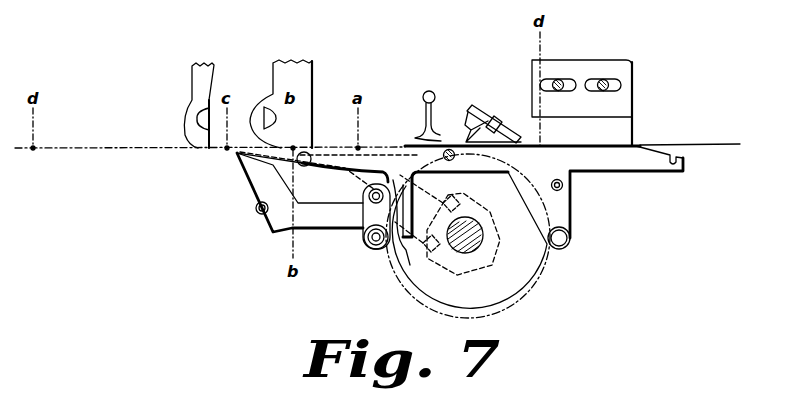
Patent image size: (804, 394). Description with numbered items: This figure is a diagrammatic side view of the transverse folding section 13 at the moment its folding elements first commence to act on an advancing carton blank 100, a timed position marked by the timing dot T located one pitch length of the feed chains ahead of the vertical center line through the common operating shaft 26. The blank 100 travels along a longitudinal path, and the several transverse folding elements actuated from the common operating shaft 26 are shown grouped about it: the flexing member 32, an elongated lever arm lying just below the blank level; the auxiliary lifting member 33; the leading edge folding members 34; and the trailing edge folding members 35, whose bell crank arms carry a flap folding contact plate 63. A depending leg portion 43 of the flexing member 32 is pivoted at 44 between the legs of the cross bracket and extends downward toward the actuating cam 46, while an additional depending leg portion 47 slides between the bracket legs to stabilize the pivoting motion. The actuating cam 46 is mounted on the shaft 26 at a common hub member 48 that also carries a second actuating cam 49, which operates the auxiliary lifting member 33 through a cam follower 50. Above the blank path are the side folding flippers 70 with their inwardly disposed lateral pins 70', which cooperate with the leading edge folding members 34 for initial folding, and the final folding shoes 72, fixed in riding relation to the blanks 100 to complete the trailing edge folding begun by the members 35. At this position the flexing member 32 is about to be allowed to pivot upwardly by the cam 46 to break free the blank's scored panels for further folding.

The carton blank 100 is at (92, 146).
The transverse folding section 13 is at (565, 277).
The common operating shaft 26 is at (480, 245).
The flexing member 32 is at (400, 150).
The auxiliary lifting member 33 is at (333, 230).
The leading edge folding members 34 is at (372, 188).
The trailing edge folding members 35 is at (481, 100).
The depending leg portion 43 is at (565, 207).
The pivot 44 is at (550, 184).
The actuating cam 46 is at (538, 295).
The additional depending leg portion 47 is at (412, 250).
The common hub member 48 is at (471, 278).
The second actuating cam 49 is at (420, 296).
The cam follower 50 is at (385, 253).
The flap folding contact plate 63 is at (500, 114).
The side folding flippers 70 is at (413, 109).
The lateral pins 70' is at (437, 82).
The final folding shoes 72 is at (618, 97).
The timing dot T is at (450, 160).